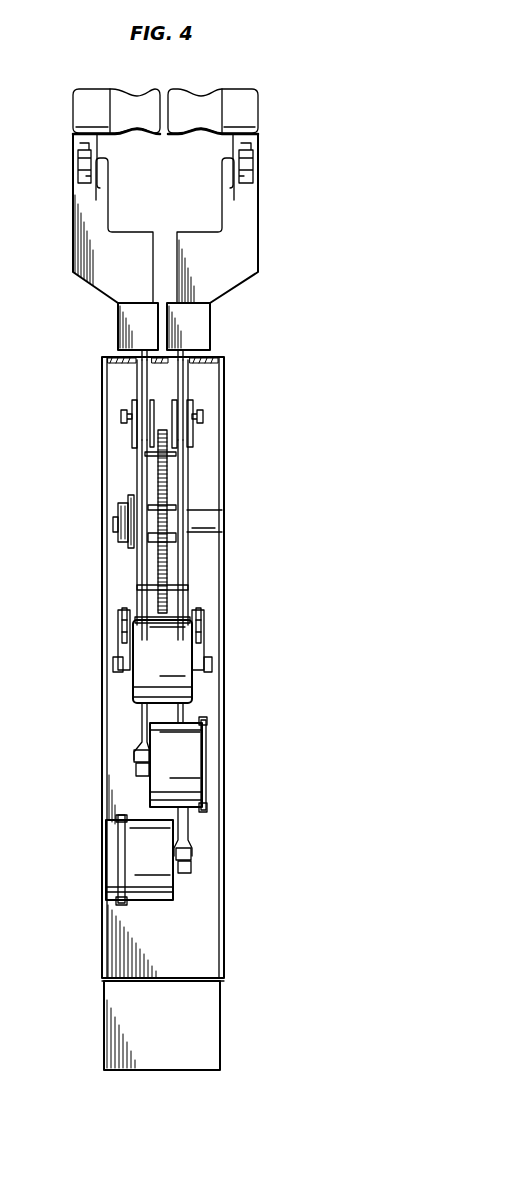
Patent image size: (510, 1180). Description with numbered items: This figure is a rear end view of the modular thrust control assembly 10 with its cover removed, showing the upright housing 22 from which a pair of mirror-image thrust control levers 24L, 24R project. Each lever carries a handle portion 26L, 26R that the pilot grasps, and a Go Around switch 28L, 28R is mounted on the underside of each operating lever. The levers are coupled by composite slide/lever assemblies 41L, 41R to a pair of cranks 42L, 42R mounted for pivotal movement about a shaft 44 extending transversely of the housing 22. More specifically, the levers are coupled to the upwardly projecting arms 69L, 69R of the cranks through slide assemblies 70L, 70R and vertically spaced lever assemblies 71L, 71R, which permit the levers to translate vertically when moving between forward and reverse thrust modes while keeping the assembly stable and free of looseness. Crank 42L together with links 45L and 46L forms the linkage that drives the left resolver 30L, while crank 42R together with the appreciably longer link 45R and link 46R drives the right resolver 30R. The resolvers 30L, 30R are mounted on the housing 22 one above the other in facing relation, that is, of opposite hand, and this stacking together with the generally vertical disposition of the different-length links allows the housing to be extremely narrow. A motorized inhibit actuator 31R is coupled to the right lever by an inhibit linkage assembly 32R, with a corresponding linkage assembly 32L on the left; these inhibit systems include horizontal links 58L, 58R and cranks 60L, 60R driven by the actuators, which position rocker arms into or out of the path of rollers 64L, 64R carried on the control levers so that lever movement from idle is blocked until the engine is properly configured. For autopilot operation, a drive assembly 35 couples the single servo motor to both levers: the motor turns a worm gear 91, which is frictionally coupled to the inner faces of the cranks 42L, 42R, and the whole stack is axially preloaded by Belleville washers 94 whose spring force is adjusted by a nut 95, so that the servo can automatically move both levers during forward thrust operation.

The apparatus 10 is at (47, 130).
The upright housing 22 is at (103, 795).
The left thrust control lever 24L is at (82, 197).
The right thrust control lever 24R is at (243, 212).
The left handle portion 26L is at (121, 100).
The right handle portion 26R is at (235, 100).
The left Go Around switch 28L is at (77, 166).
The right Go Around switch 28R is at (248, 163).
The left resolver 30L is at (213, 768).
The right resolver 30R is at (115, 853).
The right inhibit actuator 31R is at (185, 685).
The left inhibit linkage assembly 32L is at (110, 620).
The right inhibit linkage assembly 32R is at (218, 622).
The drive assembly 35 is at (178, 493).
The left slide/lever assembly 41L is at (131, 377).
The right slide/lever assembly 41R is at (199, 378).
The left crank 42L is at (142, 463).
The right crank 42R is at (181, 473).
The shaft 44 is at (192, 528).
The left link 45L is at (145, 725).
The right link 45R is at (183, 827).
The left link 46L is at (140, 753).
The right link 46R is at (193, 855).
The left inhibit link 58L is at (125, 608).
The right inhibit link 58R is at (203, 608).
The left inhibit crank 60L is at (123, 648).
The right inhibit crank 60R is at (204, 652).
The left roller 64L is at (122, 415).
The right roller 64R is at (204, 416).
The left upwardly projecting arm 69L is at (142, 388).
The right upwardly projecting arm 69R is at (184, 390).
The left slide assembly 70L is at (114, 321).
The right slide assembly 70R is at (219, 318).
The left lever assembly 71L is at (128, 438).
The right lever assembly 71R is at (197, 440).
The worm gear 91 is at (162, 556).
The Belleville washers 94 is at (112, 505).
The nut 95 is at (116, 522).